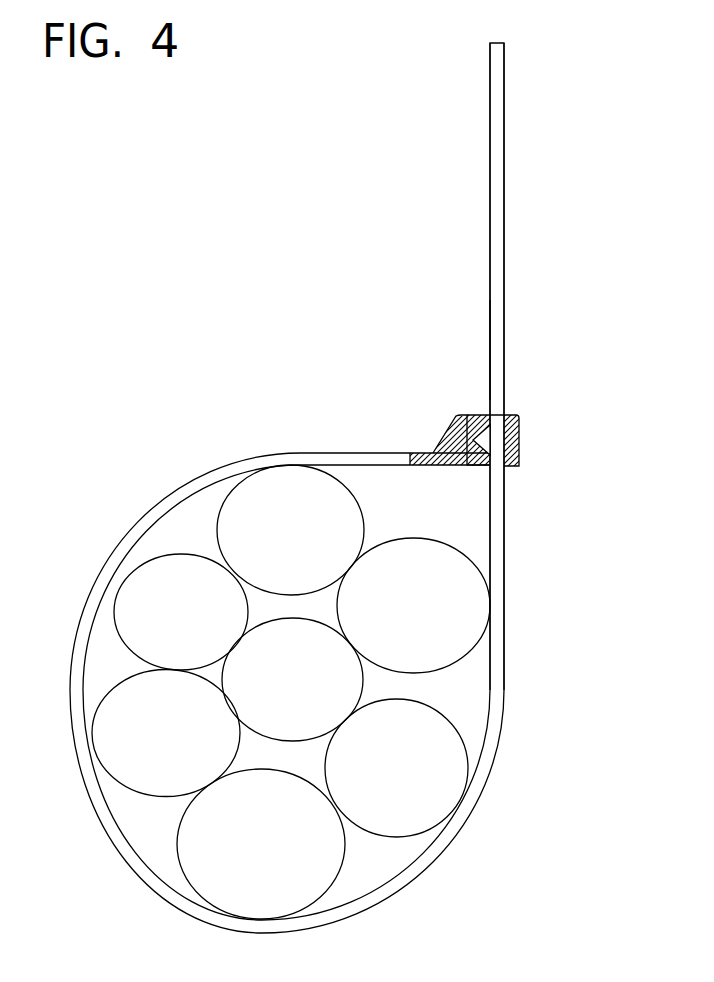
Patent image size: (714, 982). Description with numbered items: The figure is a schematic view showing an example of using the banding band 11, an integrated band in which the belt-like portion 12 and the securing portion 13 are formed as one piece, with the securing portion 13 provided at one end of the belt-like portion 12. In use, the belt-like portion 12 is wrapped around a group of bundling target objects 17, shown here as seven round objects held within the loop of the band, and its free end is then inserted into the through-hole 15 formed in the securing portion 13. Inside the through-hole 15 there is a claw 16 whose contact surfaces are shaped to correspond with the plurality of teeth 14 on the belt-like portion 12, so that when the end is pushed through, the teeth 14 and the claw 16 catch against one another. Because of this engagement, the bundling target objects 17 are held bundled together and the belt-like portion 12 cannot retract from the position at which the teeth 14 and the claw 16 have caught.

The banding band 11 is at (512, 116).
The belt-like portion 12 is at (505, 185).
The securing portion 13 is at (519, 440).
The teeth 14 is at (490, 335).
The through-hole 15 is at (485, 472).
The claw 16 is at (483, 437).
The bundling target objects 17 is at (430, 605).